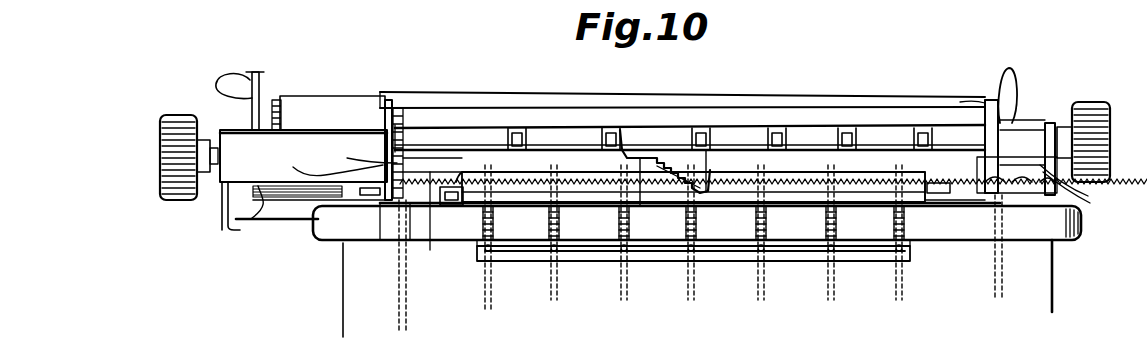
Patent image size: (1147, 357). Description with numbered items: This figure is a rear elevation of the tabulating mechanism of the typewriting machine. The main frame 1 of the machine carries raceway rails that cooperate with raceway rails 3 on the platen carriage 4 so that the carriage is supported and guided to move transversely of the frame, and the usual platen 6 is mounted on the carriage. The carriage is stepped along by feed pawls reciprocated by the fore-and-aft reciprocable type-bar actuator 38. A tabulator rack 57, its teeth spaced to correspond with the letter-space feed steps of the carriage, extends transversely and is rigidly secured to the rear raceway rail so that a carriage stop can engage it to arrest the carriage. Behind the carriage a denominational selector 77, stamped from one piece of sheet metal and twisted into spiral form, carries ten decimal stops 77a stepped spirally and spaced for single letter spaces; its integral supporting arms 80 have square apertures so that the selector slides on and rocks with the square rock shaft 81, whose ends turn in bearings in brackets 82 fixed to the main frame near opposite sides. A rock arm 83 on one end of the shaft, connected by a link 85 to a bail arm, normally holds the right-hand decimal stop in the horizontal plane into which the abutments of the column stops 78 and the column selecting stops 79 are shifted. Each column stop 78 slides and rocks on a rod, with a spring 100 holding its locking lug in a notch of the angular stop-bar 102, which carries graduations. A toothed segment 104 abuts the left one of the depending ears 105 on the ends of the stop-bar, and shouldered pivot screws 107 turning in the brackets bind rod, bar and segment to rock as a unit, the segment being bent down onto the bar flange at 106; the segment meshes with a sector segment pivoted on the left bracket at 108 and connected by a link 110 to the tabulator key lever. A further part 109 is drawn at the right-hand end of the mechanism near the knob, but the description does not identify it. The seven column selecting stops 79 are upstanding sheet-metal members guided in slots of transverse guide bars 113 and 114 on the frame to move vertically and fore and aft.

The main frame 1 is at (1052, 243).
The raceway rails 3 is at (281, 219).
The platen carriage 4 is at (228, 130).
The platen 6 is at (313, 107).
The type-bar actuator 38 is at (918, 128).
The tabulator rack 57 is at (428, 206).
The denominational selector 77 is at (641, 192).
The decimal stops 77a is at (632, 152).
The column stops 78 is at (532, 140).
The column selecting stops 79 is at (497, 266).
The supporting arms 80 is at (725, 145).
The rock shaft 81 is at (445, 150).
The brackets 82 is at (360, 162).
The rock arm 83 is at (300, 171).
The link 85 is at (399, 268).
The spring 100 is at (852, 126).
The stop-bar 102 is at (496, 122).
The toothed segment 104 is at (985, 106).
The depending ears 105 is at (404, 115).
The bent end of segment 106 is at (1003, 82).
The shouldered pivot screws 107 is at (383, 130).
The pivot 108 is at (988, 180).
The right knob 109 is at (1086, 105).
The link 110 is at (997, 272).
The guide bar 113 is at (527, 182).
The guide bar 114 is at (606, 262).